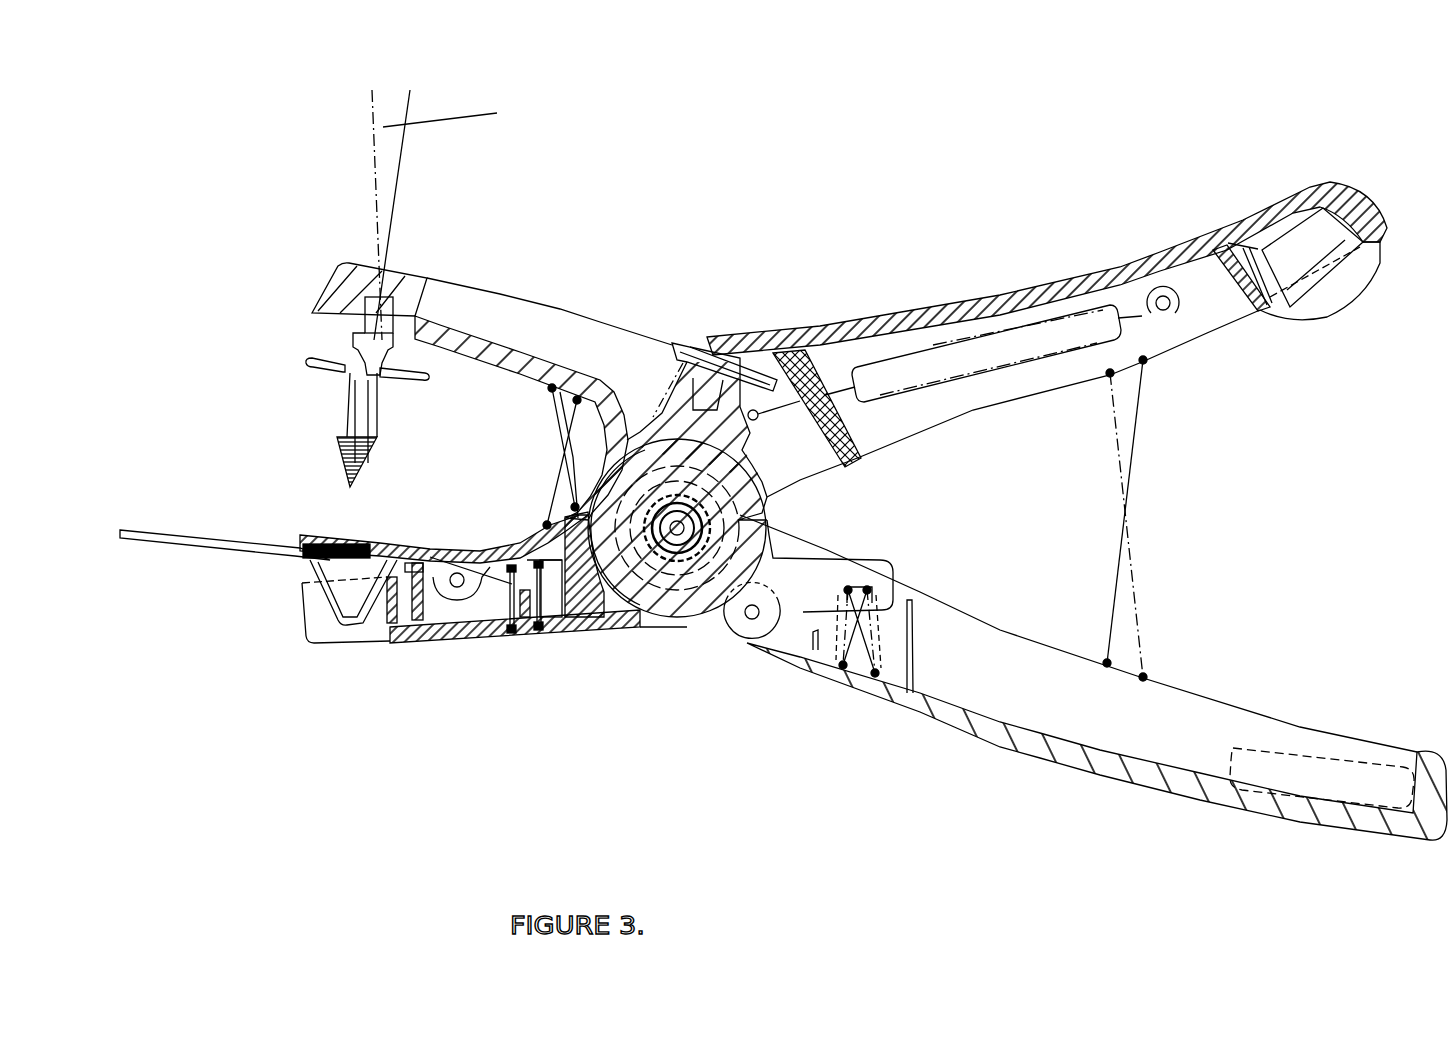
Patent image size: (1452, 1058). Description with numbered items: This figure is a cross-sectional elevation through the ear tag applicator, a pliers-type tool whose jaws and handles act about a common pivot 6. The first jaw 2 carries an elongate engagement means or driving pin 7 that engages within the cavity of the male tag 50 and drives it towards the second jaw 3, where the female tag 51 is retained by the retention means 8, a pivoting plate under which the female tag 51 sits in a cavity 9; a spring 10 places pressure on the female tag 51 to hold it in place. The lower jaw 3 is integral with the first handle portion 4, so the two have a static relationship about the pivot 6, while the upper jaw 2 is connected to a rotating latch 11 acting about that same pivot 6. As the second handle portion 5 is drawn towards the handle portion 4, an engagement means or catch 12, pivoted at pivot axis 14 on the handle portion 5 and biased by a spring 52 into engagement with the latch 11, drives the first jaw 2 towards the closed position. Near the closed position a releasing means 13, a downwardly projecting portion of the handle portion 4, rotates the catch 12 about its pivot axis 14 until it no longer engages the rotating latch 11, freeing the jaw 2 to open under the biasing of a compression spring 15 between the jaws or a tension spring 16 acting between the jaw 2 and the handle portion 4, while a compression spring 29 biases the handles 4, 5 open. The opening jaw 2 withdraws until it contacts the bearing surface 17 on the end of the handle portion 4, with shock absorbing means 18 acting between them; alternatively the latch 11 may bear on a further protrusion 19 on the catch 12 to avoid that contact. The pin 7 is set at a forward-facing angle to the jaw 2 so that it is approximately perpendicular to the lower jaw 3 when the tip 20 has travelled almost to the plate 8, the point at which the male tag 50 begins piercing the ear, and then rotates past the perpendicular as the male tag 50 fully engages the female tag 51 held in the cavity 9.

The first jaw 2 is at (457, 297).
The second jaw 3 is at (443, 633).
The first handle portion 4 is at (1110, 267).
The second handle portion 5 is at (1177, 713).
The pivot 6 is at (645, 595).
The elongate engagement means 7 is at (367, 398).
The retention means 8 is at (407, 542).
The cavity 9 is at (310, 570).
The spring 10 is at (500, 597).
The rotating latch 11 is at (703, 512).
The engagement means 12 is at (740, 618).
The releasing means 13 is at (861, 460).
The pivot axis 14 is at (757, 637).
The compression spring 15 is at (553, 463).
The tension spring 16 is at (940, 387).
The bearing surface 17 is at (730, 337).
The shock absorbing means 18 is at (690, 347).
The further protrusion 19 is at (730, 625).
The tip 20 is at (340, 447).
The compression spring 29 is at (1133, 532).
The male tag 50 is at (347, 420).
The female tag 51 is at (217, 538).
The spring 52 is at (847, 662).